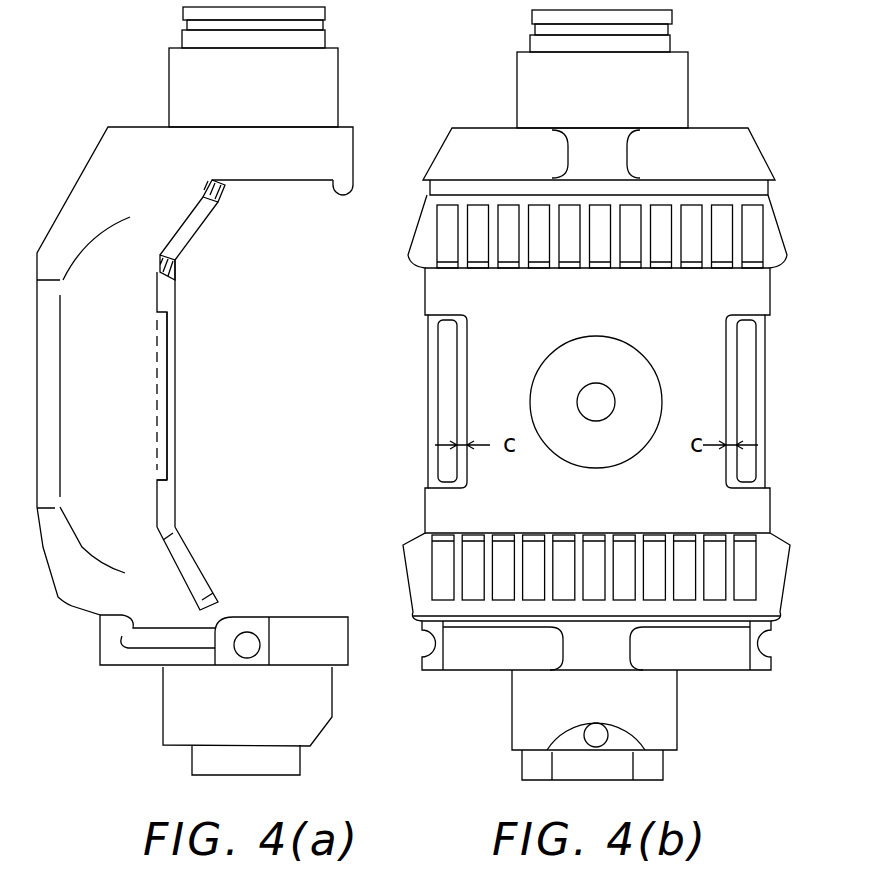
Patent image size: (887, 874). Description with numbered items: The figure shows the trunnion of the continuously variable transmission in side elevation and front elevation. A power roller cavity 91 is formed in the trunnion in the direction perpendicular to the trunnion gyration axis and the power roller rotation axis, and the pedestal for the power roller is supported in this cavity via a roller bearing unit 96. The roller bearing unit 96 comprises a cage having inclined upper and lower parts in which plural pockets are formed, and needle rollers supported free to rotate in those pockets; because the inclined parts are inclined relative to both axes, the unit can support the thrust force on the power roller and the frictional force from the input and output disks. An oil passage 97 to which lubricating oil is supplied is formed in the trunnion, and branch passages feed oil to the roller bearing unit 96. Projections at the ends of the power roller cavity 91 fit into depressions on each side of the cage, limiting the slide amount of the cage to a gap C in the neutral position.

The power roller cavity 91 is at (355, 190).
The roller bearing unit 96 is at (237, 395).
The oil passage 97 is at (600, 390).